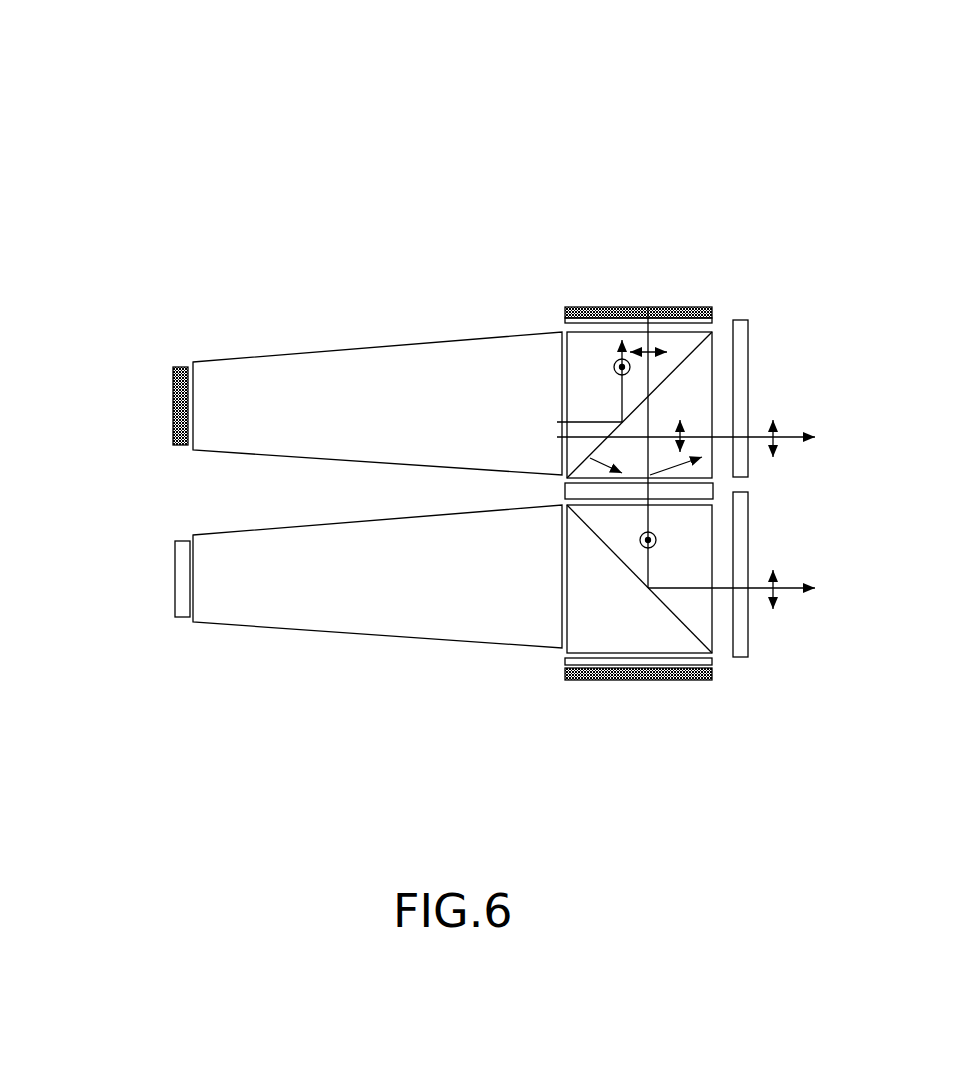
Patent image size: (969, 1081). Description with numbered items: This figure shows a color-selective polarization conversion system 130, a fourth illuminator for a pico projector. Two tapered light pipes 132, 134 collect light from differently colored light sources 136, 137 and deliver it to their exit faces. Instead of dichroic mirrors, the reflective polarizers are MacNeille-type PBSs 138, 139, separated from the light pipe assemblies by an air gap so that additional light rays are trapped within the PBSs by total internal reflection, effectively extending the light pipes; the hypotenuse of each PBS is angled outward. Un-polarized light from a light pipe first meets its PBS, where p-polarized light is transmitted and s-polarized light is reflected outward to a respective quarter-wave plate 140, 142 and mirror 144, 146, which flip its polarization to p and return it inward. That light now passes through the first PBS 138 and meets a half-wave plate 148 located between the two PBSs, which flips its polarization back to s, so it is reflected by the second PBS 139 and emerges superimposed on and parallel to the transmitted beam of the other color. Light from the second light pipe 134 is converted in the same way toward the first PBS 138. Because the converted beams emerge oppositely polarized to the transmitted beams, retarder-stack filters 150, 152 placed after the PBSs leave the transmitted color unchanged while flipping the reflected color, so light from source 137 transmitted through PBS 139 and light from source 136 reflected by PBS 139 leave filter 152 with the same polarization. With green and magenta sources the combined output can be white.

The color-selective polarization conversion system 130 is at (428, 103).
The tapered light pipe 132 is at (315, 375).
The tapered light pipe 134 is at (365, 600).
The colored light source 136 is at (172, 403).
The colored light source 137 is at (175, 578).
The MacNeille-type PBS 138 is at (700, 360).
The MacNeille-type PBS 139 is at (700, 615).
The quarter-wave plate 140 is at (565, 318).
The quarter-wave plate 142 is at (565, 667).
The mirror 144 is at (688, 307).
The mirror 146 is at (636, 680).
The half-wave plate 148 is at (700, 490).
The retarder-stack filter 150 is at (740, 400).
The retarder-stack filter 152 is at (742, 556).